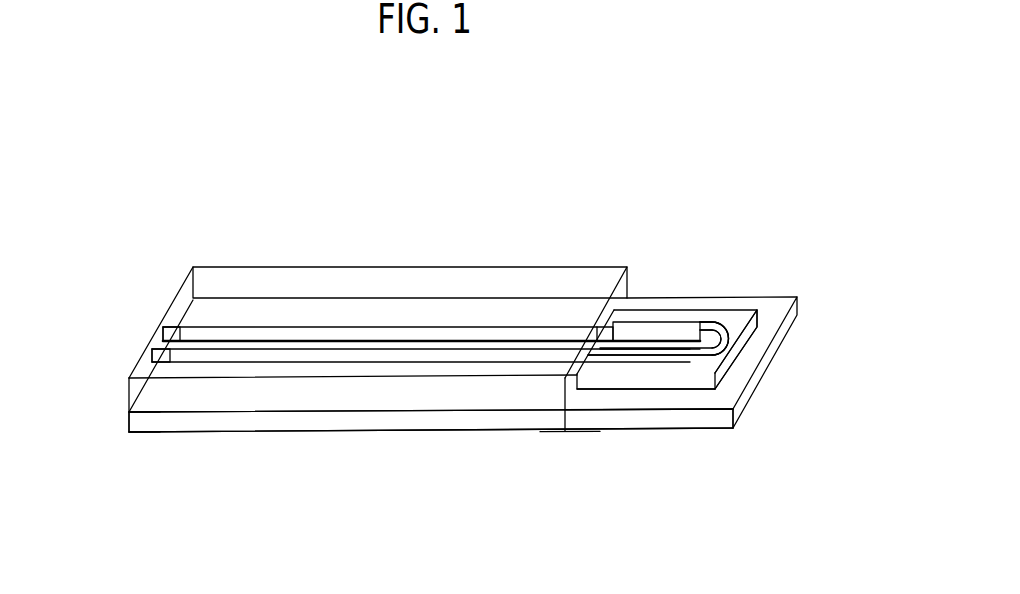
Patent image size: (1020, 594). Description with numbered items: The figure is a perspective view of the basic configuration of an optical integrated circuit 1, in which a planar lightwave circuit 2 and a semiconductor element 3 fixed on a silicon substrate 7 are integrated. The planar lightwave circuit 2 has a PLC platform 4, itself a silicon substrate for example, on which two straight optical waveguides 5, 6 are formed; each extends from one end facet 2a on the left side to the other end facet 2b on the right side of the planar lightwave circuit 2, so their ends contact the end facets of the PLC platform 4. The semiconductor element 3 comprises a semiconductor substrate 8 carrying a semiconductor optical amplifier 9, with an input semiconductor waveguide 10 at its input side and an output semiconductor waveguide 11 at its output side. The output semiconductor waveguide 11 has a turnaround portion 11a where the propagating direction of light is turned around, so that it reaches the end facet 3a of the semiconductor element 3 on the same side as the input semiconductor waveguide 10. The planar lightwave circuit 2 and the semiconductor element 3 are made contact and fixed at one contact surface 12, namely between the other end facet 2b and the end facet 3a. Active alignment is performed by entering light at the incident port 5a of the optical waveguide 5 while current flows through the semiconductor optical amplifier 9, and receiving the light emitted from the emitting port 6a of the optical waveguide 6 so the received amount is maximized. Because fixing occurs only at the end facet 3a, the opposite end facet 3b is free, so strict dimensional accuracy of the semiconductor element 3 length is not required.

The optical integrated circuit 1 is at (489, 221).
The planar lightwave circuit 2 is at (237, 455).
The one end facet 2a is at (128, 404).
The other end facet 2b is at (628, 297).
The semiconductor element 3 is at (741, 308).
The end facet 3a is at (565, 381).
The end facet 3b is at (730, 372).
The PLC platform 4 is at (352, 436).
The optical waveguide 5 is at (331, 327).
The incident port 5a is at (155, 333).
The optical waveguide 6 is at (256, 348).
The emitting port 6a is at (143, 356).
The silicon substrate 7 is at (615, 402).
The semiconductor substrate 8 is at (720, 367).
The semiconductor optical amplifier 9 is at (684, 321).
The input semiconductor waveguide 10 is at (606, 326).
The output semiconductor waveguide 11 is at (667, 365).
The turnaround portion 11a is at (738, 332).
The contact surface 12 is at (565, 434).